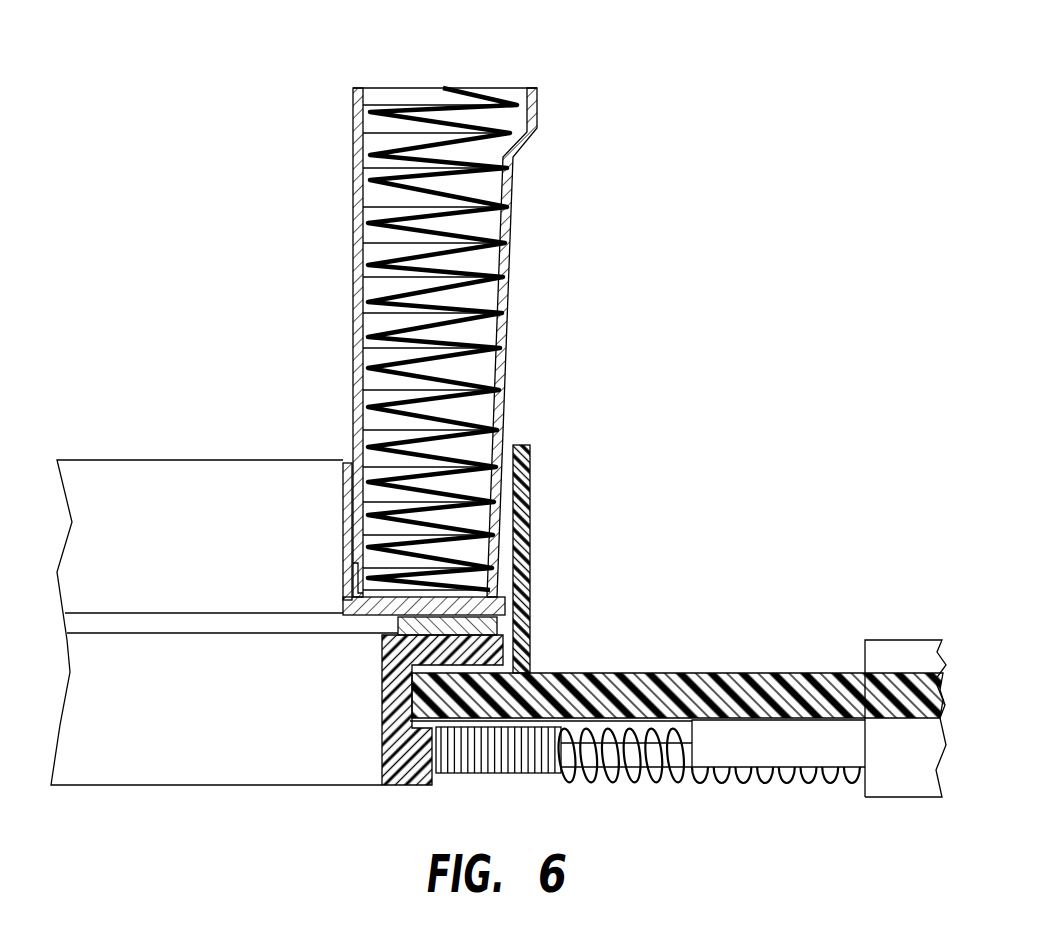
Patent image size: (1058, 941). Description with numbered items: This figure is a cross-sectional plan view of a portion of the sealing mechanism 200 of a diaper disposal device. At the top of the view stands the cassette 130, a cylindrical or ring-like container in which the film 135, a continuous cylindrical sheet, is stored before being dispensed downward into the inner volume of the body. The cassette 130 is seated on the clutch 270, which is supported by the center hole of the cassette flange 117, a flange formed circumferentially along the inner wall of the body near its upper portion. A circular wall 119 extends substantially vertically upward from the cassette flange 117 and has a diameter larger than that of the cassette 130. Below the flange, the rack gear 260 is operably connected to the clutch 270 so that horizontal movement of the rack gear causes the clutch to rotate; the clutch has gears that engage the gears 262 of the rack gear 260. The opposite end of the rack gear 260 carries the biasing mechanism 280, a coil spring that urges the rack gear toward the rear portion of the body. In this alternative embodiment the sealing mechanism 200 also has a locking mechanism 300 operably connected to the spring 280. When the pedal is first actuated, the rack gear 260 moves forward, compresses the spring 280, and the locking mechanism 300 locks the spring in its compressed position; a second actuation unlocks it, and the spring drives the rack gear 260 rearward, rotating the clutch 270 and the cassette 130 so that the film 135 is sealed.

The sealing mechanism 200 is at (810, 270).
The film 135 is at (482, 98).
The cassette 130 is at (510, 295).
The circular wall 119 is at (530, 533).
The cassette flange 117 is at (615, 673).
The clutch 270 is at (347, 713).
The gears 262 is at (495, 760).
The rack gear 260 is at (536, 785).
The biasing mechanism 280 is at (680, 783).
The locking mechanism 300 is at (895, 782).